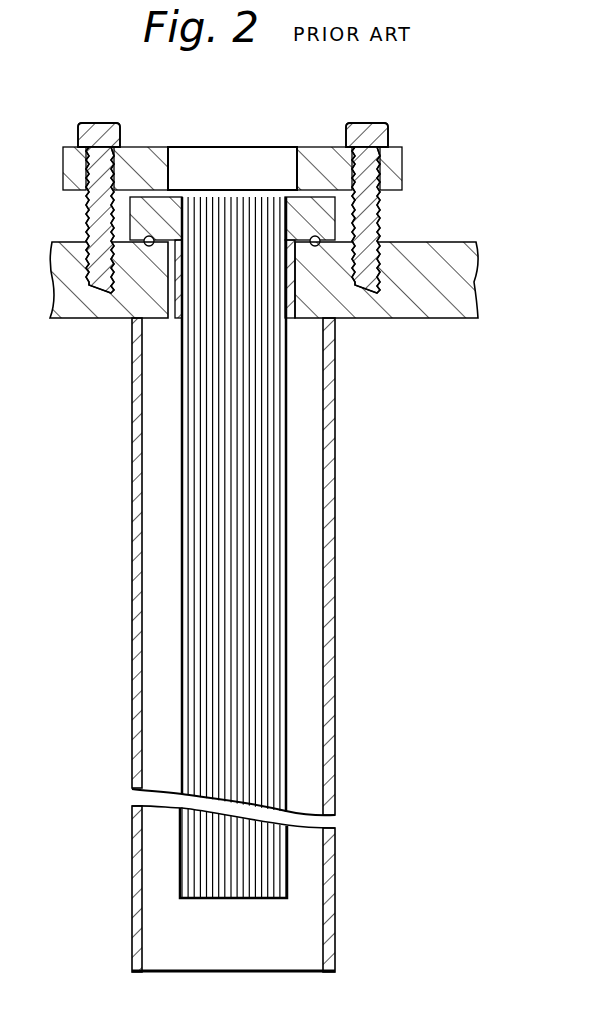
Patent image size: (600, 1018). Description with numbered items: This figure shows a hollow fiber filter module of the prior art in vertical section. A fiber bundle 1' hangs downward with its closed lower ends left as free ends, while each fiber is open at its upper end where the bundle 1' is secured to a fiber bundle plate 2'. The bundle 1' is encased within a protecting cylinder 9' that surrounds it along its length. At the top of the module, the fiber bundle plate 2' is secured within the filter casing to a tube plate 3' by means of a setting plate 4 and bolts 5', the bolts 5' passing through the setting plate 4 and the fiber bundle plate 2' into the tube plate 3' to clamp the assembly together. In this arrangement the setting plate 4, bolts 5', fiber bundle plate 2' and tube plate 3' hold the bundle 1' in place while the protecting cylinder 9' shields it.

The fiber bundle 1' is at (273, 504).
The fiber bundle plate 2' is at (276, 221).
The tube plate 3' is at (264, 301).
The setting plate 4 is at (318, 150).
The bolts 5' is at (81, 201).
The protecting cylinder 9' is at (204, 645).